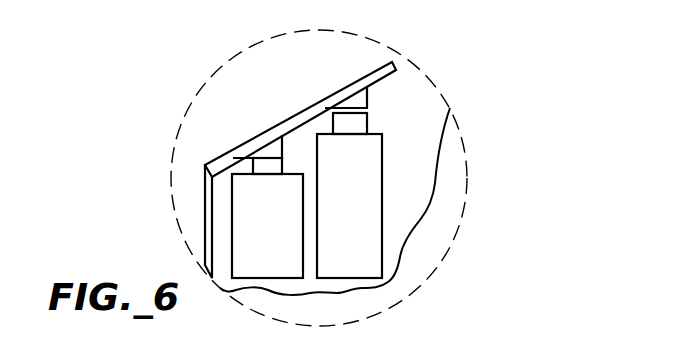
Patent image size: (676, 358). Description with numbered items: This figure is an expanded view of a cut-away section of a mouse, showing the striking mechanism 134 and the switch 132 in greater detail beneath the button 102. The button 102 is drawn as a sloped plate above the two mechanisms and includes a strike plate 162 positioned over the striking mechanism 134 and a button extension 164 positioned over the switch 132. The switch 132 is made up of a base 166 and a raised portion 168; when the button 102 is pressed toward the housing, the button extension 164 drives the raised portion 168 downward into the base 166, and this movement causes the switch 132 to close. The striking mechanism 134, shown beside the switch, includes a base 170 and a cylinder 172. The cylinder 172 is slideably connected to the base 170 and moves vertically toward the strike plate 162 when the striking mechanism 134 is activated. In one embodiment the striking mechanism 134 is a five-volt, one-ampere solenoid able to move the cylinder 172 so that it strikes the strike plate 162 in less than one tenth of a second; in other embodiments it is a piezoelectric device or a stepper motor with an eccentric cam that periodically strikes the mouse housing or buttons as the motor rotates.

The button 102 is at (246, 151).
The switch 132 is at (230, 257).
The striking mechanism 134 is at (402, 172).
The strike plate 162 is at (362, 97).
The button extension 164 is at (270, 148).
The base 166 is at (245, 210).
The raised portion 168 is at (260, 167).
The base 170 is at (360, 242).
The cylinder 172 is at (355, 127).